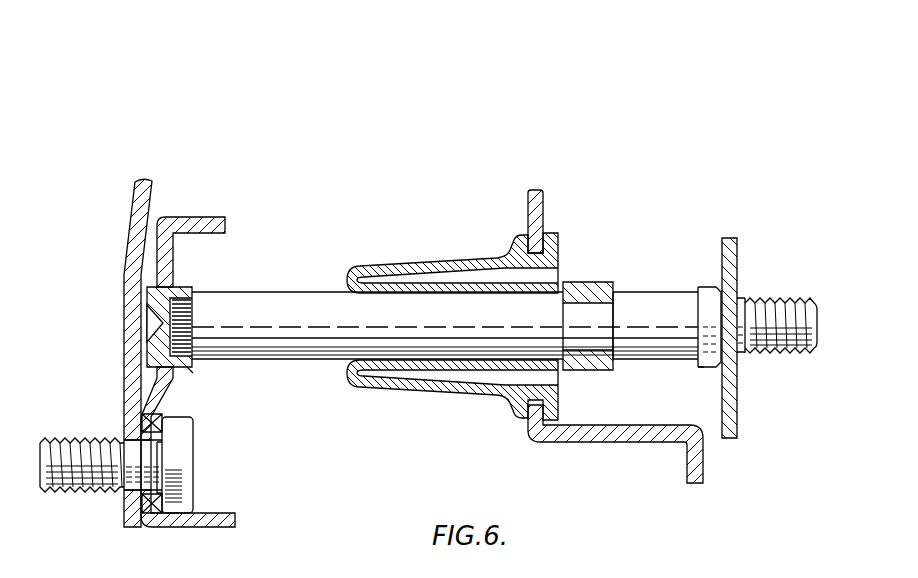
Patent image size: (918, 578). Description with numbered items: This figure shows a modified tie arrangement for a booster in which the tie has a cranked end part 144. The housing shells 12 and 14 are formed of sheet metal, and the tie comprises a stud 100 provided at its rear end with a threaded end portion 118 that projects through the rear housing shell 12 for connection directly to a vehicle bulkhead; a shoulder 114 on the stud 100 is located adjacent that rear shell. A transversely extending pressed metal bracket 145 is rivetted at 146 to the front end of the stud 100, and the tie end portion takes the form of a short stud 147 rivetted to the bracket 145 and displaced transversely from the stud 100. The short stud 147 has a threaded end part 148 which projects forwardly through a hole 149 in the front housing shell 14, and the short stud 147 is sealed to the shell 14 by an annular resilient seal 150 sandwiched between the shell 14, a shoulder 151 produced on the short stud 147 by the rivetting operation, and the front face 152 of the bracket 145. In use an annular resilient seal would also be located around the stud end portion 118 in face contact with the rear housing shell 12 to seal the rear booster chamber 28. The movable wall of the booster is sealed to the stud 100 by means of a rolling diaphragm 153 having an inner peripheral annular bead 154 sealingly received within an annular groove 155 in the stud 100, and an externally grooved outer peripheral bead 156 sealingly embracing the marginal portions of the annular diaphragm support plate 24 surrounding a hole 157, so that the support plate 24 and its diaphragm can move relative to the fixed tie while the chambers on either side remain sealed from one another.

The housing shell 12 is at (728, 253).
The front housing shell 14 is at (130, 272).
The annular support plate 24 is at (538, 206).
The rear booster chamber 28 is at (655, 408).
The stud 100 is at (291, 318).
The shoulder 114 is at (723, 317).
The threaded end portion 118 is at (772, 357).
The cranked end part 144 is at (203, 390).
The pressed metal bracket 145 is at (163, 261).
The rivet 146 is at (193, 366).
The short stud 147 is at (118, 492).
The threaded end part 148 is at (83, 452).
The hole 149 is at (127, 493).
The annular resilient seal 150 is at (143, 514).
The shoulder 151 is at (146, 428).
The front face 152 is at (148, 508).
The rolling diaphragm 153 is at (398, 396).
The inner peripheral annular bead 154 is at (602, 287).
The annular groove 155 is at (602, 320).
The outer peripheral bead 156 is at (558, 233).
The hole 157 is at (535, 278).